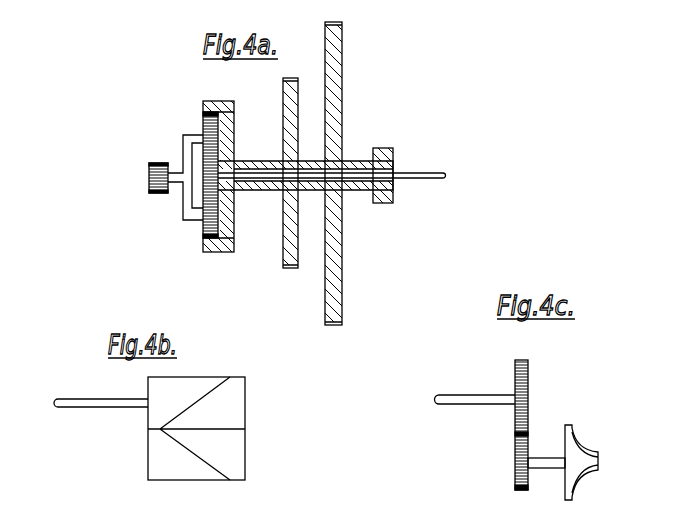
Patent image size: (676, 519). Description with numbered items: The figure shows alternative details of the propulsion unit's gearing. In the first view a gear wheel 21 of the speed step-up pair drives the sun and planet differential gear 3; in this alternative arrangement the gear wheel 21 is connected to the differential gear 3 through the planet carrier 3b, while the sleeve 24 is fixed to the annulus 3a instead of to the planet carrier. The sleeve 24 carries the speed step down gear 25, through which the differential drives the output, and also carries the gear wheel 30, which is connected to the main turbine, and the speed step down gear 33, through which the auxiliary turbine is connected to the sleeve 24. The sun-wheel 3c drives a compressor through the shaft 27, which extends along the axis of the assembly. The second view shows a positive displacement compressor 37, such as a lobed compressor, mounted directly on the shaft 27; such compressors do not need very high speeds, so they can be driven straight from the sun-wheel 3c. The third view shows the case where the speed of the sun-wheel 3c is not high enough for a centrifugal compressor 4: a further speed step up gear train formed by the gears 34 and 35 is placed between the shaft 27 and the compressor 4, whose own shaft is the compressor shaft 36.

In FIG. 4A, the sun and planet differential gear 3 is at (189, 248).
In FIG. 4A, the annulus 3a is at (215, 107).
In FIG. 4A, the planet carrier 3b is at (183, 135).
In FIG. 4A, the sun-wheel 3c is at (209, 172).
In FIG. 4A, the gear wheel 21 is at (150, 174).
In FIG. 4A, the sleeve 24 is at (267, 163).
In FIG. 4A, the speed step down gear 25 is at (394, 158).
In FIG. 4A, the shaft 27 is at (438, 171).
In FIG. 4B, the shaft 27 is at (82, 401).
In FIG. 4C, the shaft 27 is at (450, 397).
In FIG. 4A, the gear wheel 30 is at (292, 88).
In FIG. 4A, the speed step down gear 33 is at (335, 63).
In FIG. 4C, the speed step up gear 34 is at (529, 374).
In FIG. 4C, the speed step up gear 35 is at (516, 466).
In FIG. 4C, the compressor shaft 36 is at (548, 461).
In FIG. 4B, the positive displacement compressor 37 is at (232, 429).
In FIG. 4C, the compressor 4 is at (576, 437).